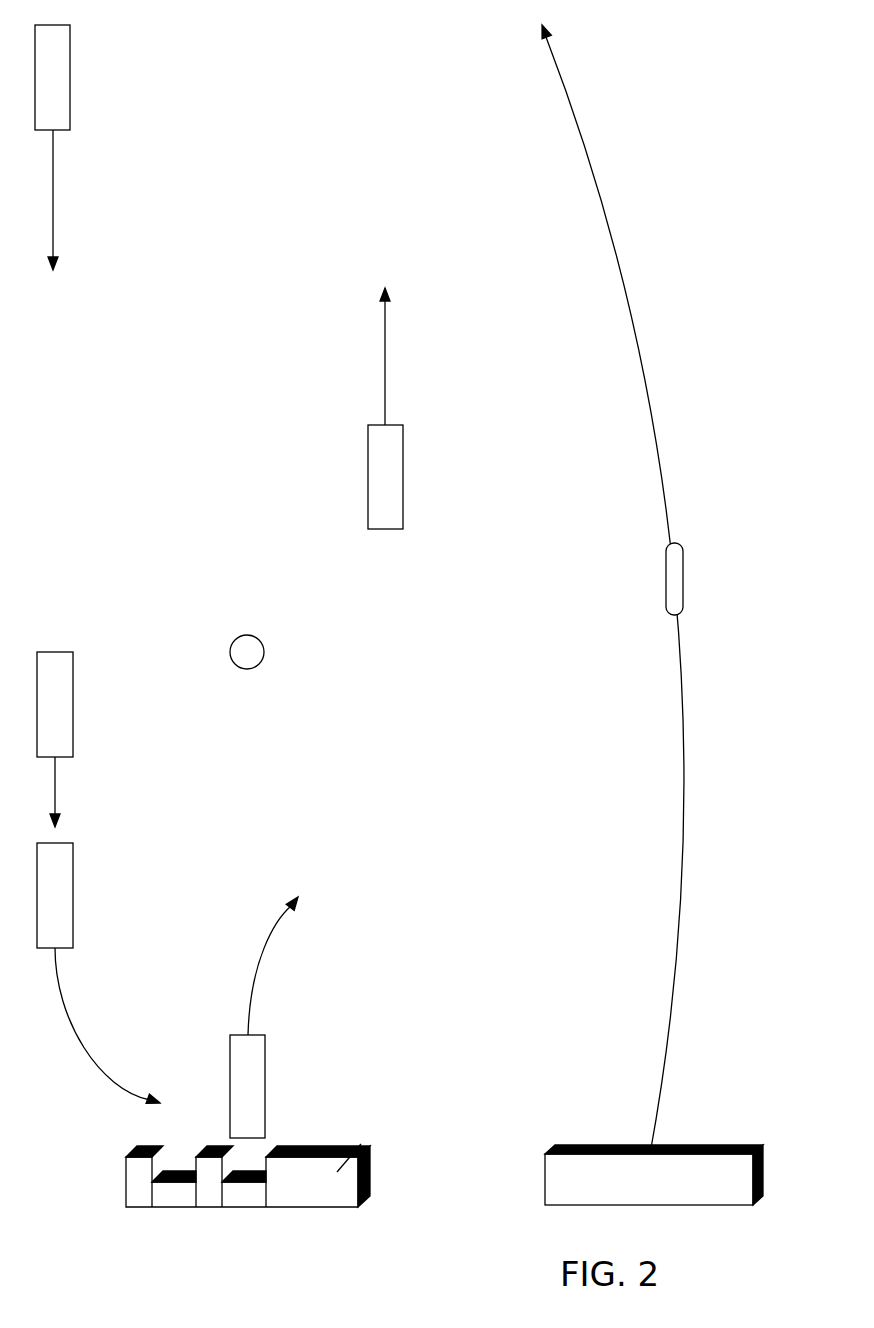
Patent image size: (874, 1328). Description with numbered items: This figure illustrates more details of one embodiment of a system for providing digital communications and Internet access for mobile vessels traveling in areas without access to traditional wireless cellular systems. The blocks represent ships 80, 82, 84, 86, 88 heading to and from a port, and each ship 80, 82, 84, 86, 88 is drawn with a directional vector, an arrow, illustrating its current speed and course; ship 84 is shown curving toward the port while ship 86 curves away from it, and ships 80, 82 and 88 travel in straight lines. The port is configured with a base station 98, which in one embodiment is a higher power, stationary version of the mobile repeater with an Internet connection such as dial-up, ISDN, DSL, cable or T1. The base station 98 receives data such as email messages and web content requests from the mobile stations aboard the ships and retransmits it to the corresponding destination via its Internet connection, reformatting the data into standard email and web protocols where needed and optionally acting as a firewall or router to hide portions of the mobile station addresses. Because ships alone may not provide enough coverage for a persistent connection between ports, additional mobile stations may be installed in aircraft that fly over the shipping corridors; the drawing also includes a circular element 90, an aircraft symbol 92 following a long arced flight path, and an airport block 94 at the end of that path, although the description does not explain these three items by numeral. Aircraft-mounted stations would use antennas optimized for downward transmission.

The ship 80 is at (70, 77).
The ship 82 is at (73, 703).
The ship 84 is at (73, 895).
The ship 86 is at (265, 1085).
The ship 88 is at (403, 478).
The waypoint 90 is at (264, 649).
The aircraft on flight path 92 is at (683, 580).
The airport 94 is at (650, 1205).
The base station 98 is at (369, 1147).